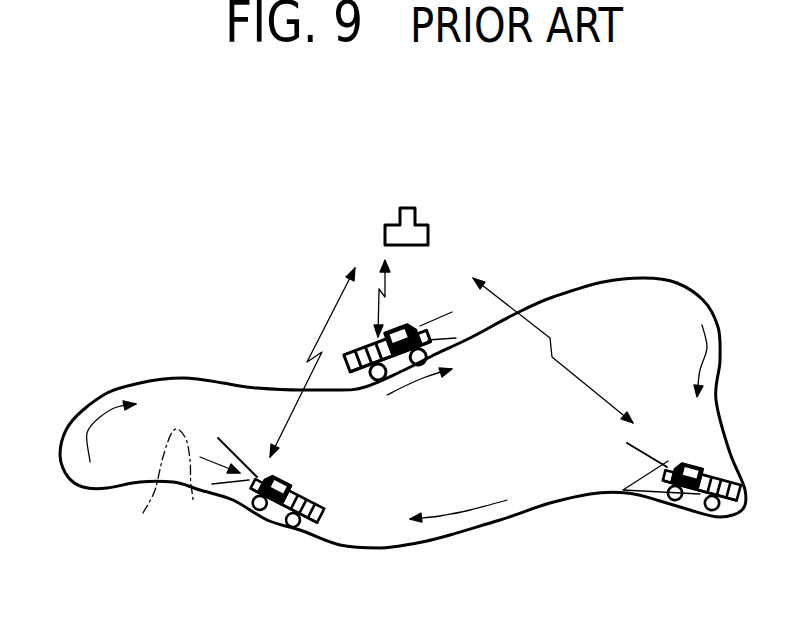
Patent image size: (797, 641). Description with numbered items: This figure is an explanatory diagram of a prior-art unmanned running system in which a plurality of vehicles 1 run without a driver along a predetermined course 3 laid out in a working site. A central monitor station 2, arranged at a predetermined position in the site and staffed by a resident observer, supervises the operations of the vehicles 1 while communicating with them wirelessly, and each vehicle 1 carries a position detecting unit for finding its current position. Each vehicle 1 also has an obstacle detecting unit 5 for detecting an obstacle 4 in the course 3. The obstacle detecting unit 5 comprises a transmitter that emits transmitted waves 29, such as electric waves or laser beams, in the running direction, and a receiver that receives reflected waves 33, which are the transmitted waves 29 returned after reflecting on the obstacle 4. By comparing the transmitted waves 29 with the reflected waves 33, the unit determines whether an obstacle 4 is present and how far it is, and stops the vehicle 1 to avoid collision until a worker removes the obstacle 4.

The vehicle 1 is at (366, 367).
The central monitor station 2 is at (428, 222).
The course 3 is at (530, 518).
The obstacle 4 is at (154, 482).
The obstacle detecting unit 5 is at (414, 324).
The transmitted waves 29 is at (452, 312).
The reflected waves 33 is at (200, 457).